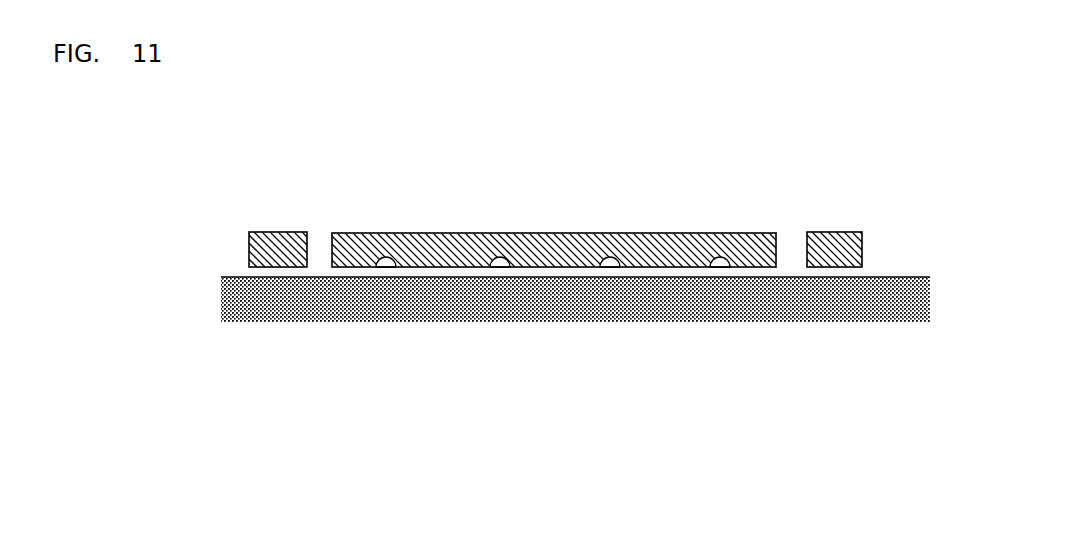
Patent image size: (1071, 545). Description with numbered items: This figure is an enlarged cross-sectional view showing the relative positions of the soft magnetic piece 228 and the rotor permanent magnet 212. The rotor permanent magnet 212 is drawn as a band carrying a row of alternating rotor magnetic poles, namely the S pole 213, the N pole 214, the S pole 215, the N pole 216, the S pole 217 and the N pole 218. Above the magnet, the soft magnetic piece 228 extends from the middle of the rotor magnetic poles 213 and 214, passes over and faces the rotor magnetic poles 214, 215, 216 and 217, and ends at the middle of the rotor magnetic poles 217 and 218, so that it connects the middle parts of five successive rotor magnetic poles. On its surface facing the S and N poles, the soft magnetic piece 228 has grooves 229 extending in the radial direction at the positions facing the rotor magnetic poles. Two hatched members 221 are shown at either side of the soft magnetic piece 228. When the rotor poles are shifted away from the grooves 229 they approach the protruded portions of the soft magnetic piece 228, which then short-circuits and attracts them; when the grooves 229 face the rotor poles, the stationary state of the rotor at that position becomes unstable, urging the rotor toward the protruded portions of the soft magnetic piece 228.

The rotor permanent magnet 212 is at (323, 303).
The rotor magnetic pole S 213 is at (273, 287).
The rotor magnetic pole N 214 is at (385, 287).
The rotor magnetic pole S 215 is at (500, 286).
The rotor magnetic pole N 216 is at (610, 286).
The rotor magnetic pole S 217 is at (727, 286).
The rotor magnetic pole N 218 is at (837, 286).
The yoke 221 is at (275, 243).
The soft magnetic piece 228 is at (550, 222).
The groove 229 is at (506, 257).